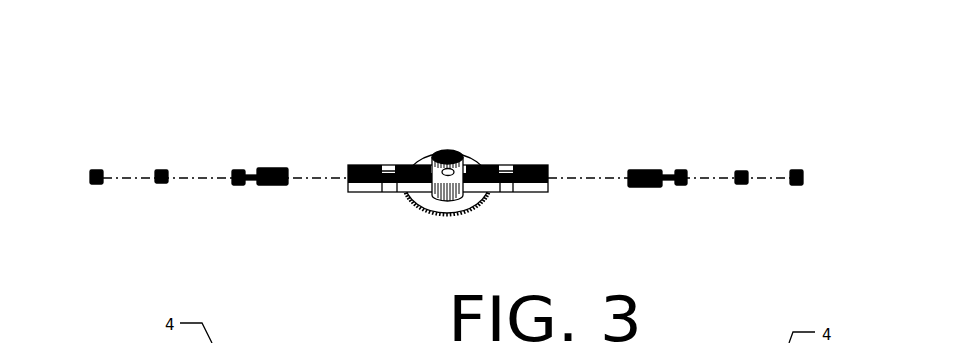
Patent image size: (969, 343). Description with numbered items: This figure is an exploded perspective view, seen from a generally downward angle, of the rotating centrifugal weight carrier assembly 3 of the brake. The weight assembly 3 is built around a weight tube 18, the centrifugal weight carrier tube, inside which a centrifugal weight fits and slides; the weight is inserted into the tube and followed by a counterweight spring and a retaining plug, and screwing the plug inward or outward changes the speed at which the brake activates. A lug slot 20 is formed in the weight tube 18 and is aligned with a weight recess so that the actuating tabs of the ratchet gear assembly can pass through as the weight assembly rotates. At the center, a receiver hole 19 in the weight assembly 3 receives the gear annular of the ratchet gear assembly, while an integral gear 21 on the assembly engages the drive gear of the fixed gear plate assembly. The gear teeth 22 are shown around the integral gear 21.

The centrifugal weight carrier assembly 3 is at (501, 99).
The weight tube 18 is at (363, 173).
The receiver hole 19 is at (437, 167).
The lug slot 20 is at (503, 168).
The integral gear 21 is at (474, 210).
The gear teeth 22 is at (430, 215).